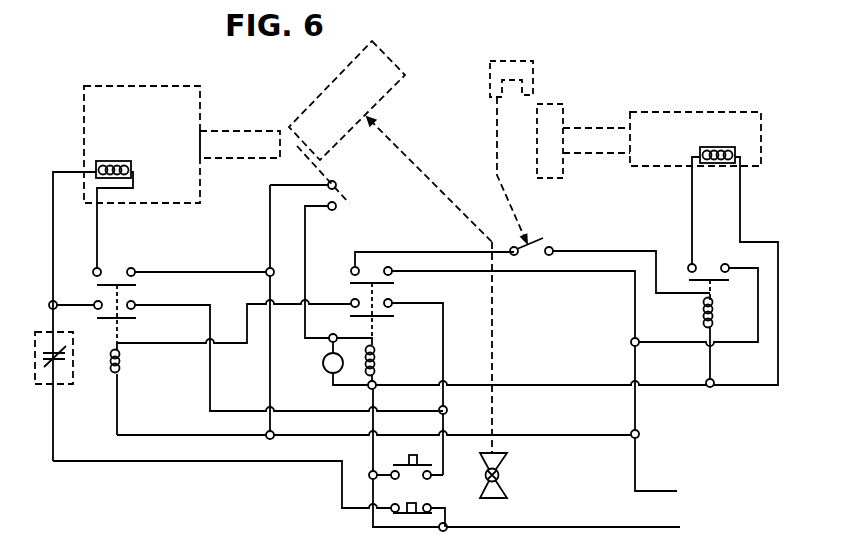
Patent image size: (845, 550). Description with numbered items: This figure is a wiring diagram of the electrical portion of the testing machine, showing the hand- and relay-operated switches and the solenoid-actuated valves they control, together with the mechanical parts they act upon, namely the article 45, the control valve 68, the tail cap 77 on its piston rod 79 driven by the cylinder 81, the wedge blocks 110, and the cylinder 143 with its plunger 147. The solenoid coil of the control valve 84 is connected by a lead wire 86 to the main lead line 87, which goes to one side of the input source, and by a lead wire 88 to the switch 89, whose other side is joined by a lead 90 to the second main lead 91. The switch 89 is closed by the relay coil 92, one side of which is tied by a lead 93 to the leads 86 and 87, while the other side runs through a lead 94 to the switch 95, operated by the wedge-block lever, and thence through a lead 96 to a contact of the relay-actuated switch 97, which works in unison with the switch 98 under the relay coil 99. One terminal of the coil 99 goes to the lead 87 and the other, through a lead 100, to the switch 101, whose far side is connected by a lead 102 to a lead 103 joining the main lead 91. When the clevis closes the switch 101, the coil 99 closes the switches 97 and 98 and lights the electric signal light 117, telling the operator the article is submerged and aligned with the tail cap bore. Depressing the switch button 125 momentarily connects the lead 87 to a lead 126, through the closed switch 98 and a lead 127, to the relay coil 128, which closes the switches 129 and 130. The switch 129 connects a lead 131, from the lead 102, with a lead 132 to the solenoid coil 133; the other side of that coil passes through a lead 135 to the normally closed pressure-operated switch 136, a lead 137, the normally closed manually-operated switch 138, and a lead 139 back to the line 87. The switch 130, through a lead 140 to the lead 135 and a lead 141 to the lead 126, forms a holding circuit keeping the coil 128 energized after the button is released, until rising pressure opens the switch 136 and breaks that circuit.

The article 45 is at (348, 62).
The control valve 68 is at (499, 477).
The tail cap 77 is at (548, 104).
The piston rod 79 is at (588, 128).
The cylinder 81 is at (740, 112).
The solenoid-operated control valve 84 is at (718, 163).
The lead wire 86 is at (740, 200).
The main lead line 87 is at (373, 447).
The lead wire 88 is at (692, 200).
The switch 89 is at (705, 280).
The lead 90 is at (690, 342).
The second main lead 91 is at (573, 271).
The relay coil 92 is at (704, 312).
The lead 93 is at (712, 356).
The lead 94 is at (617, 251).
The switch 95 is at (543, 238).
The lead 96 is at (447, 252).
The relay-actuated switch 97 is at (353, 283).
The switch 98 is at (383, 316).
The relay coil 99 is at (380, 360).
The lead 100 is at (305, 330).
The switch 101 is at (348, 197).
The lead 102 is at (270, 226).
The lead 103 is at (315, 436).
The wedge blocks 110 is at (514, 61).
The electric signal light 117 is at (328, 367).
The switch button 125 is at (422, 464).
The lead 126 is at (443, 362).
The lead 127 is at (222, 343).
The relay coil 128 is at (120, 360).
The switch 129 is at (106, 284).
The switch 130 is at (135, 318).
The lead 131 is at (213, 272).
The lead 132 is at (97, 222).
The solenoid coil 133 is at (115, 161).
The lead 135 is at (67, 172).
The pressure-operated switch 136 is at (44, 332).
The lead 137 is at (53, 412).
The manually-operated switch 138 is at (395, 504).
The lead 139 is at (445, 516).
The lead 140 is at (85, 305).
The lead 141 is at (190, 305).
The cylinder 143 is at (153, 86).
The piston rod or plunger 147 is at (235, 131).